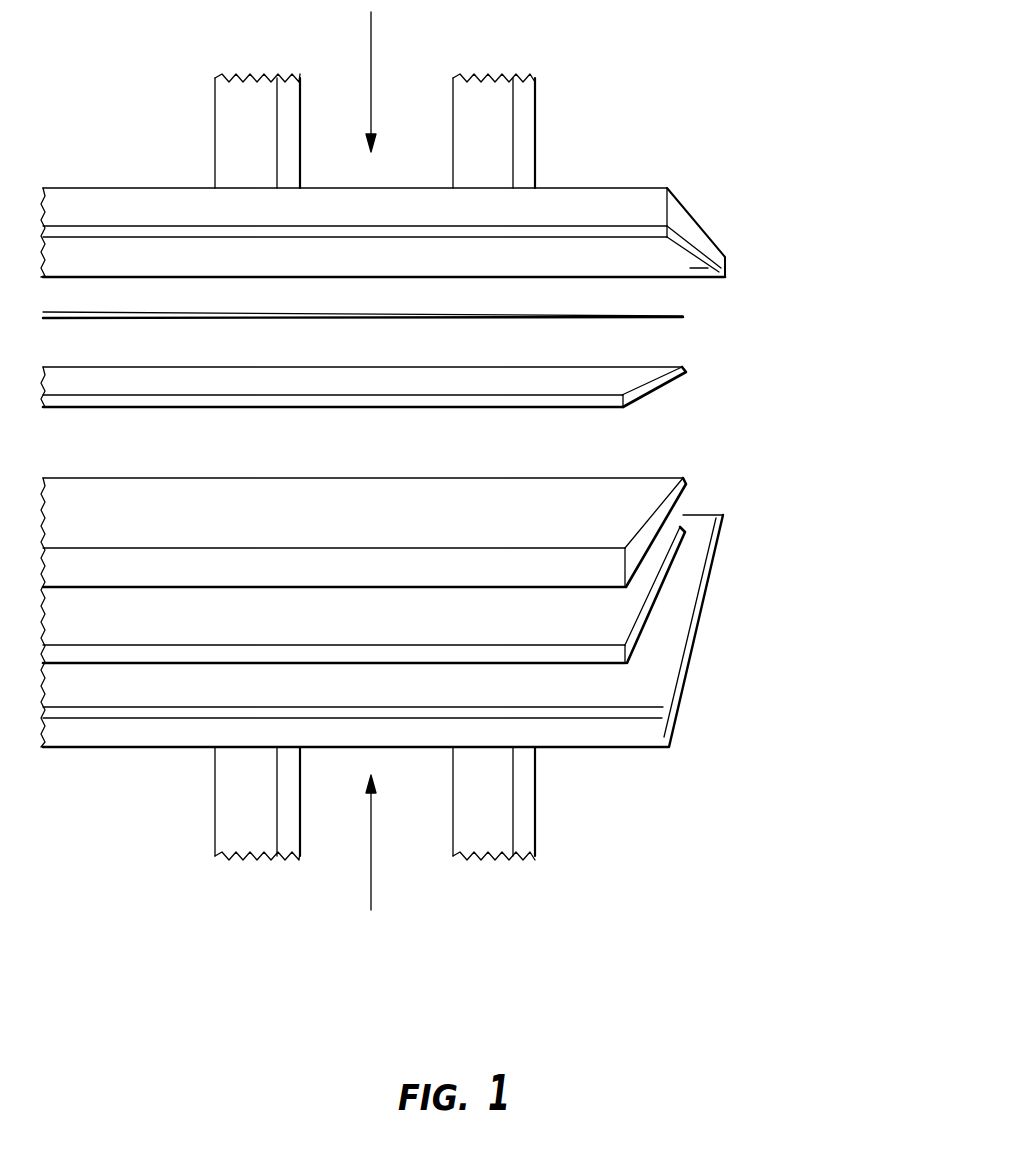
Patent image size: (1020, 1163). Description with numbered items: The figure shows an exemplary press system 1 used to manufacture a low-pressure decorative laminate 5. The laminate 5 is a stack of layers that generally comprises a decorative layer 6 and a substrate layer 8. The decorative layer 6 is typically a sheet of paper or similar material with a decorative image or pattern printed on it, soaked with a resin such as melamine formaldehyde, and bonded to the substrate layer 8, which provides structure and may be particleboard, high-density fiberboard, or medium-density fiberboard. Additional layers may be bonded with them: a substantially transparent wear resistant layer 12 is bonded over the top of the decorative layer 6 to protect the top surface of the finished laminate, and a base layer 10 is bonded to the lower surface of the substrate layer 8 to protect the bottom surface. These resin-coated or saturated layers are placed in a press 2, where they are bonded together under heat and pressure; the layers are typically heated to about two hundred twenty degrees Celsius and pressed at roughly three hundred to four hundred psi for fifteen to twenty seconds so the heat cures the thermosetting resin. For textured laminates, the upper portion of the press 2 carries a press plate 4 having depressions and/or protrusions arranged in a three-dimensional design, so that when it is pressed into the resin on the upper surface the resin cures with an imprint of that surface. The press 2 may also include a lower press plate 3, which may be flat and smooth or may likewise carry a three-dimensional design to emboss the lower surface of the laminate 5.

The press system 1 is at (462, 461).
The press 2 is at (403, 467).
The lower press plate 3 is at (680, 602).
The press plate 4 is at (728, 264).
The laminate 5 is at (462, 470).
The decorative layer 6 is at (648, 370).
The substrate layer 8 is at (657, 493).
The base layer 10 is at (409, 565).
The wear resistant layer 12 is at (686, 317).